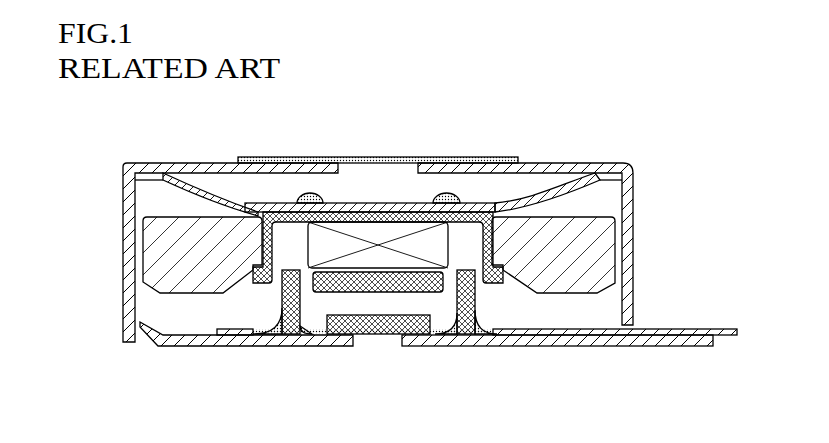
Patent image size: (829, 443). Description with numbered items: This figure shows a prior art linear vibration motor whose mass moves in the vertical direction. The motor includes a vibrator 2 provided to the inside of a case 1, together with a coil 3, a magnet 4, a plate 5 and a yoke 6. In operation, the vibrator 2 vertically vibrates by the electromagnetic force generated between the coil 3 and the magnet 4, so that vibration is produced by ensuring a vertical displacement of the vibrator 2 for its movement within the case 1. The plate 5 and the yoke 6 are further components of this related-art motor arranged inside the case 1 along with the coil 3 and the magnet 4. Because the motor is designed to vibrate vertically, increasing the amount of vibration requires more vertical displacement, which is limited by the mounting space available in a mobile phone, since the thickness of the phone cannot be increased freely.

The case 1 is at (630, 207).
The vibrator 2 is at (607, 252).
The coil 3 is at (467, 323).
The magnet 4 is at (393, 263).
The plate 5 is at (328, 289).
The yoke 6 is at (257, 284).